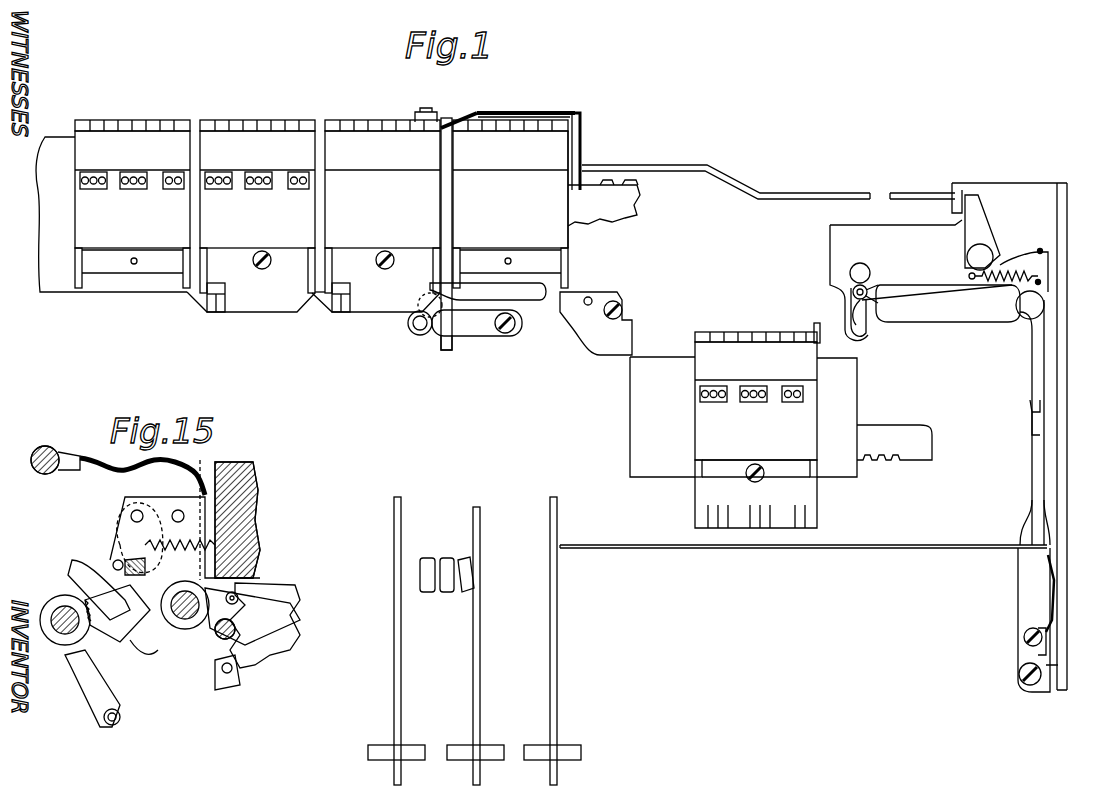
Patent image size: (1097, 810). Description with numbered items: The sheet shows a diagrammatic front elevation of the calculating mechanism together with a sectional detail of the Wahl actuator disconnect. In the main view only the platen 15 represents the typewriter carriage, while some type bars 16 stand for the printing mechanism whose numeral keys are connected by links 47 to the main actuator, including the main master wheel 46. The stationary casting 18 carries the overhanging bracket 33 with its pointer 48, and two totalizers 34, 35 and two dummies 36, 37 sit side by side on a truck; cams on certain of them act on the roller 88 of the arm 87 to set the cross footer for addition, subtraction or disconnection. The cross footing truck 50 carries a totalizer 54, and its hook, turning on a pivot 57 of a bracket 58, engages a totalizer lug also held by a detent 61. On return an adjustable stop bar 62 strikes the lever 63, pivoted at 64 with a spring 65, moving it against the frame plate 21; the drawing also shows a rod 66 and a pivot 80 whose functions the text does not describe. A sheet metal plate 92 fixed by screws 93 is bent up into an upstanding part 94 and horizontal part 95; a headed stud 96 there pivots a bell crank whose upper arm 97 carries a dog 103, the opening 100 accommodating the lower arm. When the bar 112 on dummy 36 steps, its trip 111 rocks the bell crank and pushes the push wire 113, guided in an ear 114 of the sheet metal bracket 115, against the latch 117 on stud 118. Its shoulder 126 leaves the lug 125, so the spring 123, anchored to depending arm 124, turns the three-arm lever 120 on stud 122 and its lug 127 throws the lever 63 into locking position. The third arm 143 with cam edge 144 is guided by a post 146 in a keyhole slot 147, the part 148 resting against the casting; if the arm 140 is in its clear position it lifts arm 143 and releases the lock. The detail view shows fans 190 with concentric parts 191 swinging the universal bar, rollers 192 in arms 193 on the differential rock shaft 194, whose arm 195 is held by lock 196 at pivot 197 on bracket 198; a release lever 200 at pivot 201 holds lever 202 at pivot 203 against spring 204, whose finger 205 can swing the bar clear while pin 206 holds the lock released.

In FIG. 1, the platen 15 is at (111, 223).
In FIG. 1, the type bars 16 is at (462, 592).
In FIG. 1, the casting 18 is at (636, 198).
In FIG. 15, the casting 18 is at (258, 488).
In FIG. 1, the plate 21 is at (1063, 356).
In FIG. 1, the overhanging bracket 33 is at (452, 138).
In FIG. 1, the totalizer 34 is at (147, 120).
In FIG. 1, the totalizer 35 is at (264, 120).
In FIG. 1, the dummy 36 is at (376, 120).
In FIG. 1, the dummy 37 is at (510, 204).
In FIG. 1, the main master wheel 46 is at (441, 345).
In FIG. 15, the links 47 is at (238, 680).
In FIG. 1, the pointer 48 is at (417, 112).
In FIG. 1, the truck 50 is at (665, 364).
In FIG. 1, the totalizer 54 is at (695, 420).
In FIG. 1, the pivot 57 is at (616, 303).
In FIG. 1, the bracket 58 is at (632, 334).
In FIG. 1, the detent 61 is at (490, 290).
In FIG. 1, the adjustable stop bar 62 is at (910, 460).
In FIG. 1, the lever 63 is at (1032, 470).
In FIG. 1, the pivot 64 is at (1035, 686).
In FIG. 1, the spring 65 is at (1052, 604).
In FIG. 1, the rod 66 is at (853, 544).
In FIG. 1, the pivot 80 is at (426, 296).
In FIG. 1, the arm 87 is at (470, 336).
In FIG. 1, the roller 88 is at (412, 333).
In FIG. 1, the sheet metal plate 92 is at (604, 180).
In FIG. 1, the screws 93 is at (632, 180).
In FIG. 1, the upstanding part 94 is at (582, 160).
In FIG. 1, the horizontal part 95 is at (580, 113).
In FIG. 1, the headed stud 96 is at (570, 116).
In FIG. 1, the upper arm 97 is at (536, 116).
In FIG. 1, the opening 100 is at (604, 205).
In FIG. 1, the dog 103 is at (507, 116).
In FIG. 1, the trip 111 is at (492, 111).
In FIG. 1, the bar 112 is at (463, 116).
In FIG. 1, the push wire 113 is at (870, 192).
In FIG. 1, the ear 114 is at (952, 186).
In FIG. 1, the sheet metal bracket 115 is at (1008, 179).
In FIG. 1, the latch 117 is at (985, 233).
In FIG. 1, the headed stud 118 is at (967, 258).
In FIG. 1, the three-arm lever 120 is at (1017, 422).
In FIG. 1, the headed stud 122 is at (1030, 305).
In FIG. 1, the spring 123 is at (1015, 272).
In FIG. 1, the depending arm 124 is at (969, 277).
In FIG. 1, the lug 125 is at (1045, 257).
In FIG. 1, the shoulder 126 is at (1036, 252).
In FIG. 1, the lug 127 is at (1031, 412).
In FIG. 1, the arm 140 is at (816, 324).
In FIG. 1, the third arm 143 is at (940, 322).
In FIG. 1, the cam edge 144 is at (870, 292).
In FIG. 1, the post 146 is at (872, 283).
In FIG. 1, the keyhole slot 147 is at (851, 328).
In FIG. 1, the bent part 148 is at (830, 252).
In FIG. 15, the fans 190 is at (288, 635).
In FIG. 15, the concentric part 191 is at (285, 608).
In FIG. 15, the rollers 192 is at (112, 725).
In FIG. 15, the arms 193 is at (112, 665).
In FIG. 15, the differential rock shaft 194 is at (62, 605).
In FIG. 15, the arm 195 is at (72, 560).
In FIG. 15, the lock 196 is at (185, 581).
In FIG. 15, the pivot 197 is at (117, 617).
In FIG. 15, the bracket 198 is at (200, 495).
In FIG. 15, the release lever 200 is at (44, 446).
In FIG. 15, the pivot 201 is at (178, 510).
In FIG. 15, the lever 202 is at (120, 520).
In FIG. 15, the pivot 203 is at (137, 510).
In FIG. 15, the spring 204 is at (205, 540).
In FIG. 15, the finger 205 is at (152, 655).
In FIG. 15, the pin 206 is at (129, 559).